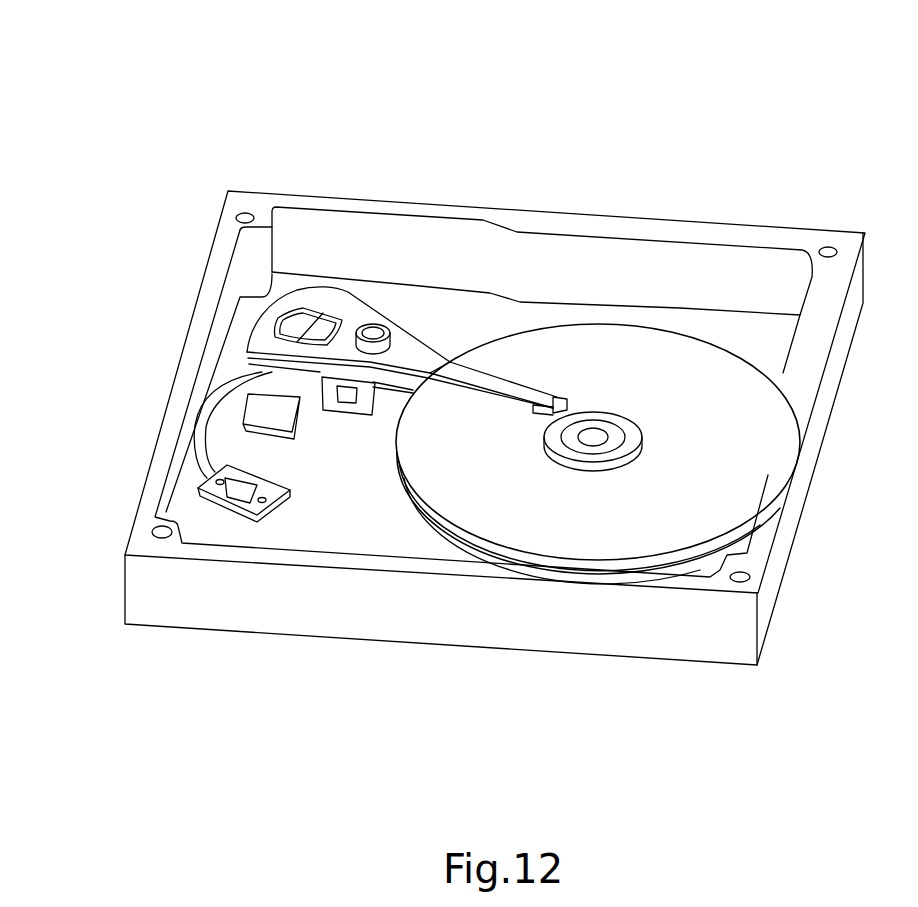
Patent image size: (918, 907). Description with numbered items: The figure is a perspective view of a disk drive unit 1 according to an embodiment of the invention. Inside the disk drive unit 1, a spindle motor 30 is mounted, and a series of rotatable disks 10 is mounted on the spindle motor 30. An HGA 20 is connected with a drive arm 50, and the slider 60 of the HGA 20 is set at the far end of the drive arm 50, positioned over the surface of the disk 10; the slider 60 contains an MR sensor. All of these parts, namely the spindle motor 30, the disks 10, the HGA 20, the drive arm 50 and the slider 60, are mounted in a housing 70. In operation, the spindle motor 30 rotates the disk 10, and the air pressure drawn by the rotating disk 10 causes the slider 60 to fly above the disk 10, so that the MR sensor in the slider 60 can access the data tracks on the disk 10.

The disk drive unit 1 is at (45, 58).
The rotatable disk 10 is at (683, 370).
The HGA 20 is at (477, 378).
The spindle motor 30 is at (594, 437).
The drive arm 50 is at (400, 332).
The slider 60 is at (553, 396).
The housing 70 is at (785, 280).